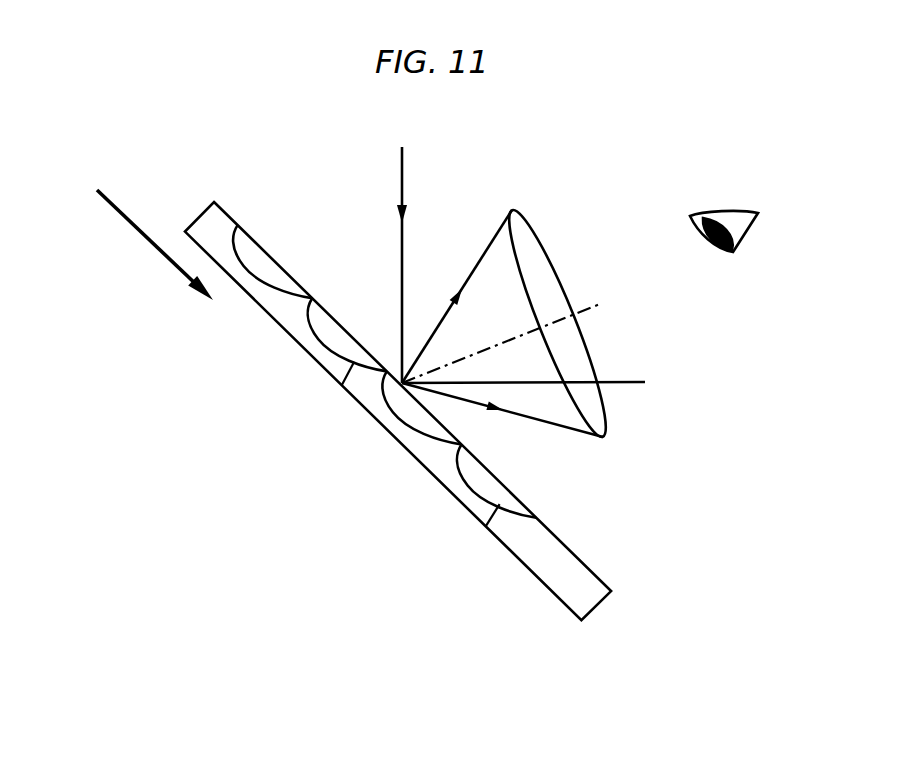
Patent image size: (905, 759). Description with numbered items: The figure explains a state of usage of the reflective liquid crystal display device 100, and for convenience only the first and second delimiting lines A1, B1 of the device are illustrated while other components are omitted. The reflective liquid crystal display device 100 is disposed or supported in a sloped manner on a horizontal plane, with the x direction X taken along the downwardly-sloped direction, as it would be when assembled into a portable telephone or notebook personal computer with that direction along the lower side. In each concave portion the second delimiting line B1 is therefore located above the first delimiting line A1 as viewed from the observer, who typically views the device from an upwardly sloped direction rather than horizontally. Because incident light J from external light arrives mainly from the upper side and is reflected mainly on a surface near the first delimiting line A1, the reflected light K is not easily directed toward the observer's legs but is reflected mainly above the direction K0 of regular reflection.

The reflective liquid crystal display device 100 is at (597, 610).
The first delimiting line A1 is at (342, 385).
The second delimiting line B1 is at (461, 447).
The incident light J is at (399, 249).
The reflected light K is at (487, 265).
The direction of regular reflection K0 is at (541, 390).
The x direction X is at (157, 264).